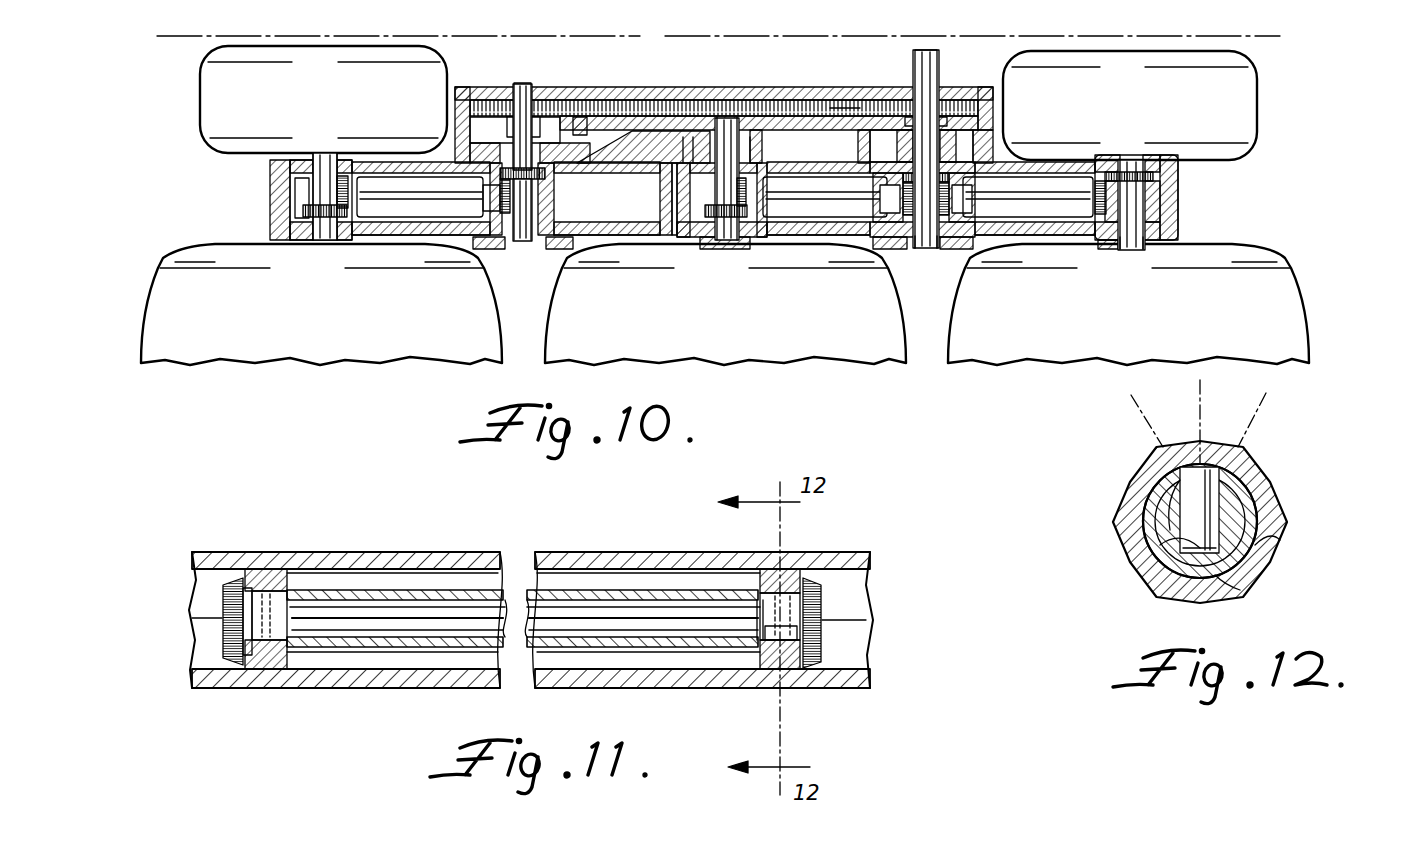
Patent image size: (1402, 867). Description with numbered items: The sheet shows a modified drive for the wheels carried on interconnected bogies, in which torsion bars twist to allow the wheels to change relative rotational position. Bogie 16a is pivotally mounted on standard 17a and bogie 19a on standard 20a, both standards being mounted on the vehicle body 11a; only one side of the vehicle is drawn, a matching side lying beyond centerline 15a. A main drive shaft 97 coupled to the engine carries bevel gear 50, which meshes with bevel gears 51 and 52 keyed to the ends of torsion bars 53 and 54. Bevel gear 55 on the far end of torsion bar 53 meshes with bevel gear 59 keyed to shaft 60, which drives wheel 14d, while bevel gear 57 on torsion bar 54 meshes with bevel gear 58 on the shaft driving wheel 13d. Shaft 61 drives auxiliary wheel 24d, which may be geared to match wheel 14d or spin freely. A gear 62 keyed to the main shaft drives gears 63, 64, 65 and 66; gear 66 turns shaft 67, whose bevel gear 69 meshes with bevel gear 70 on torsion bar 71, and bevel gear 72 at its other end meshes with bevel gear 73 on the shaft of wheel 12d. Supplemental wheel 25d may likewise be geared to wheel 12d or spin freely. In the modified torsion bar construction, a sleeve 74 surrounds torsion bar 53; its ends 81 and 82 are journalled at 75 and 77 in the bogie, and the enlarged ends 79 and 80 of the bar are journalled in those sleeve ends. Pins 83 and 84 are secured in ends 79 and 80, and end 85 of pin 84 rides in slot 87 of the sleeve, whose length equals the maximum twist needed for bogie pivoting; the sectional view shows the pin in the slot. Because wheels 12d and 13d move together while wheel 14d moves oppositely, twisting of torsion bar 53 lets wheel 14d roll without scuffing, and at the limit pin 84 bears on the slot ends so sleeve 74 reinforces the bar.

In FIG. 10, the centerline 15a is at (160, 36).
In FIG. 10, the supplemental wheel 25d is at (204, 98).
In FIG. 10, the auxiliary wheel 24d is at (1258, 90).
In FIG. 10, the wheel 12d is at (160, 300).
In FIG. 10, the wheel 13d is at (822, 362).
In FIG. 10, the wheel 14d is at (1300, 298).
In FIG. 10, the standard 20a is at (456, 138).
In FIG. 10, the vehicle body 11a is at (723, 60).
In FIG. 10, the gear 65 is at (642, 100).
In FIG. 10, the gear 64 is at (752, 100).
In FIG. 10, the gear 63 is at (840, 100).
In FIG. 10, the gear 62 is at (996, 108).
In FIG. 10, the standard 17a is at (996, 150).
In FIG. 10, the bogie 19a is at (272, 202).
In FIG. 10, the bevel gear 72 is at (337, 185).
In FIG. 10, the bevel gear 73 is at (300, 214).
In FIG. 10, the torsion bar 71 is at (390, 196).
In FIG. 10, the gear 66 is at (542, 117).
In FIG. 10, the shaft 67 is at (518, 84).
In FIG. 10, the bevel gear 69 is at (547, 180).
In FIG. 10, the bevel gear 70 is at (531, 205).
In FIG. 10, the bevel gear 58 is at (662, 205).
In FIG. 10, the bevel gear 57 is at (787, 240).
In FIG. 10, the torsion bar 54 is at (797, 196).
In FIG. 10, the bevel gear 52 is at (900, 248).
In FIG. 10, the bevel gear 50 is at (922, 183).
In FIG. 10, the main drive shaft 97 is at (938, 66).
In FIG. 10, the bevel gear 51 is at (936, 248).
In FIG. 10, the torsion bar 53 is at (1003, 196).
In FIG. 11, the torsion bar 53 is at (485, 600).
In FIG. 12, the torsion bar 53 is at (1125, 500).
In FIG. 10, the bevel gear 59 is at (1180, 185).
In FIG. 10, the bevel gear 55 is at (1180, 205).
In FIG. 10, the bogie 16a is at (1180, 228).
In FIG. 11, the bogie 16a is at (535, 692).
In FIG. 10, the shaft 61 is at (1130, 158).
In FIG. 10, the shaft 60 is at (1130, 250).
In FIG. 11, the sleeve end 81 is at (246, 578).
In FIG. 11, the journal 75 is at (270, 585).
In FIG. 11, the enlarged end of torsion bar 79 is at (287, 640).
In FIG. 11, the pin 83 is at (243, 665).
In FIG. 11, the sleeve 74 is at (640, 592).
In FIG. 12, the sleeve 74 is at (1283, 510).
In FIG. 11, the journal 77 is at (800, 575).
In FIG. 12, the journal 77 is at (1275, 565).
In FIG. 11, the pin end 85 is at (766, 592).
In FIG. 12, the pin end 85 is at (1188, 445).
In FIG. 11, the pin 84 is at (778, 640).
In FIG. 12, the pin 84 is at (1130, 560).
In FIG. 11, the enlarged end of torsion bar 80 is at (760, 618).
In FIG. 11, the sleeve end 82 is at (798, 662).
In FIG. 12, the sleeve end 82 is at (1235, 598).
In FIG. 12, the slot 87 is at (1256, 470).